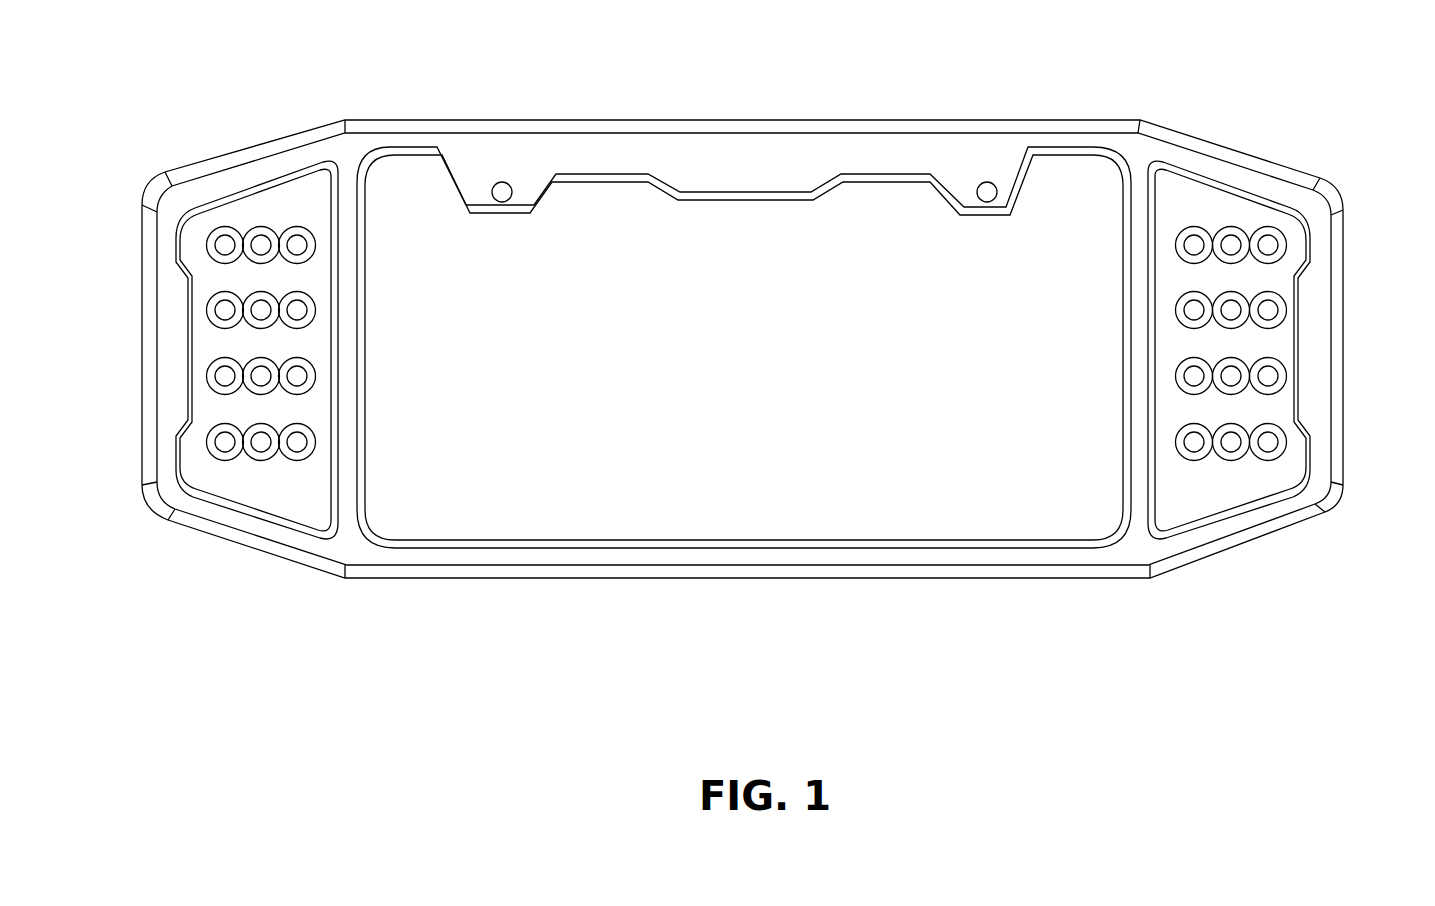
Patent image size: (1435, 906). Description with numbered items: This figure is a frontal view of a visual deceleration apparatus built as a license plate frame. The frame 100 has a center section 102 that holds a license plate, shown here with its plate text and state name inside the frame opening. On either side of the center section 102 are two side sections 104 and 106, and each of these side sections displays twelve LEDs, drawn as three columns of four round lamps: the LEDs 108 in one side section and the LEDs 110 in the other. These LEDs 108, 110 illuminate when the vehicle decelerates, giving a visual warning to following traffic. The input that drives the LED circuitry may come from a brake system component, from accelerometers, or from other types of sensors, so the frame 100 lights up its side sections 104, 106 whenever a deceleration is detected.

The frame 100 is at (1042, 88).
The center section 102 is at (813, 541).
The side section 104 is at (1345, 179).
The side section 106 is at (183, 168).
The LEDs 108 is at (270, 215).
The LEDs 110 is at (1227, 487).